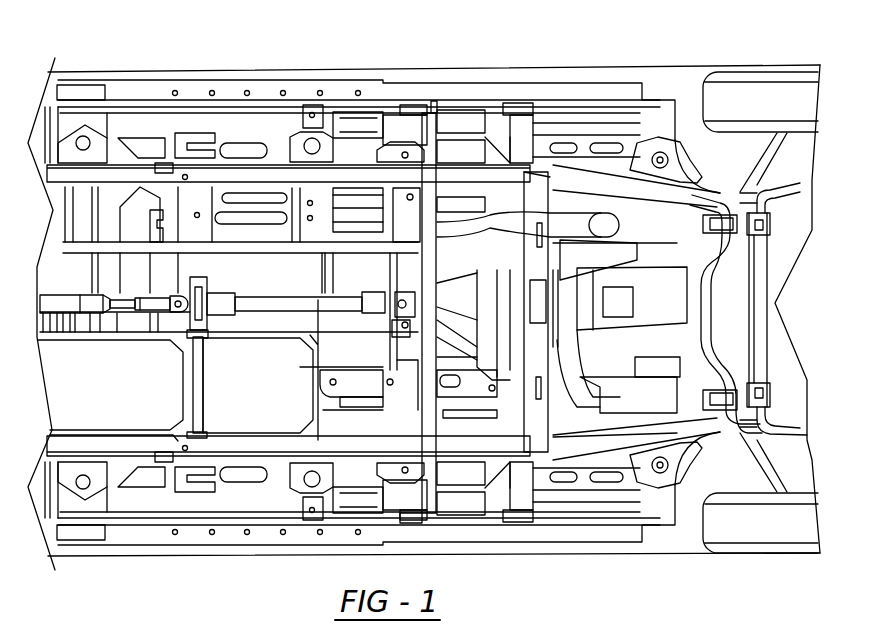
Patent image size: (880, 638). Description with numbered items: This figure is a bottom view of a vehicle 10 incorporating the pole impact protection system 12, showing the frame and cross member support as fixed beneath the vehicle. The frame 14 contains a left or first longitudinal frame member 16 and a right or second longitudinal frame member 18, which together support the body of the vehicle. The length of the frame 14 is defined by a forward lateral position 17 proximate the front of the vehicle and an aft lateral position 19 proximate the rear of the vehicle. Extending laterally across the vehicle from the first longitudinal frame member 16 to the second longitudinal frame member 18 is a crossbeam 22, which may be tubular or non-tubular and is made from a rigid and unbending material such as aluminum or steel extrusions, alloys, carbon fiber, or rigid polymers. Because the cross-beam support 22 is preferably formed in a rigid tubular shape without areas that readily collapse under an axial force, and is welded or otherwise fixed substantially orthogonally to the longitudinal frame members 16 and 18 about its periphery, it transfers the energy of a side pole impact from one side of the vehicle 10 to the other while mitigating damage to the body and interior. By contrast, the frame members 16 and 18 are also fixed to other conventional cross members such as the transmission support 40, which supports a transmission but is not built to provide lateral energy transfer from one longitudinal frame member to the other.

The vehicle 10 is at (663, 48).
The pole impact protection system 12 is at (432, 186).
The frame 14 is at (288, 103).
The first longitudinal frame member 16 is at (288, 103).
The second longitudinal frame member 18 is at (288, 526).
The forward lateral position 17 is at (713, 205).
The aft lateral position 19 is at (213, 165).
The cross-beam support member 22 is at (433, 349).
The transmission support 40 is at (540, 212).